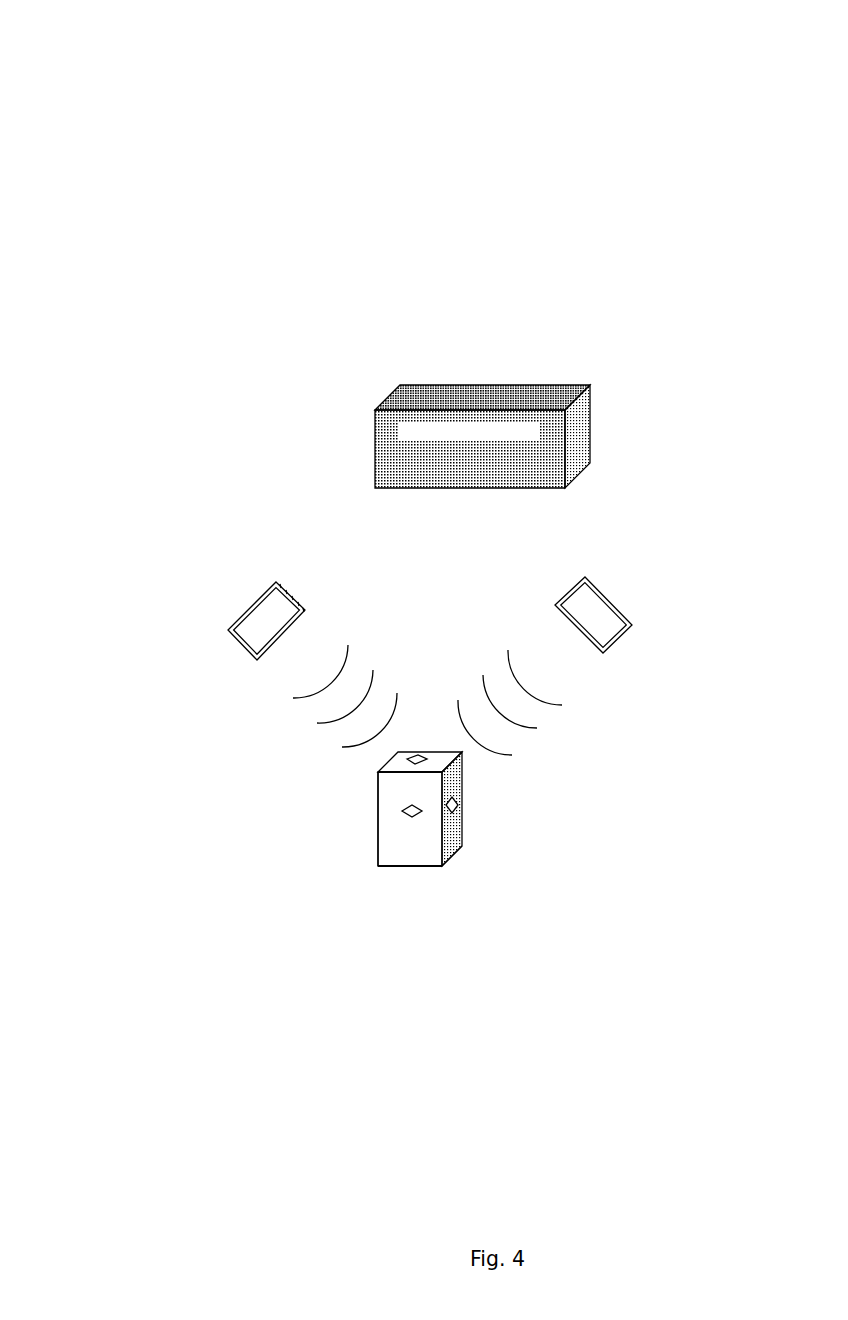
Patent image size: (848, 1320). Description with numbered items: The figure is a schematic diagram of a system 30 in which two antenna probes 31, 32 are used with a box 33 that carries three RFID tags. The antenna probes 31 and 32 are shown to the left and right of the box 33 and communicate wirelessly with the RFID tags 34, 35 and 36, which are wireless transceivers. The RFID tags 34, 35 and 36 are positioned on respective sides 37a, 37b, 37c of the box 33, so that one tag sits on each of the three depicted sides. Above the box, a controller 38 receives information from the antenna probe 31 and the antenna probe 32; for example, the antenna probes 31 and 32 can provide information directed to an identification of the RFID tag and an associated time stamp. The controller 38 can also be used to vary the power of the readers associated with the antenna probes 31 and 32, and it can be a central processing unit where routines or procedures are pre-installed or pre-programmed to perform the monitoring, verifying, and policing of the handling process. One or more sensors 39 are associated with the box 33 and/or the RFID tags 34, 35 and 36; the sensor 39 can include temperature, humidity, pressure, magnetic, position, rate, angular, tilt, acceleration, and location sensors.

The system 30 is at (40, 30).
The antenna probe 31 is at (292, 596).
The antenna probe 32 is at (585, 577).
The box 33 is at (377, 857).
The RFID tag 34 is at (377, 787).
The RFID tag 35 is at (457, 800).
The RFID tag 36 is at (378, 830).
The side of box 37a is at (377, 768).
The side of box 37b is at (413, 858).
The side of box 37c is at (457, 840).
The controller 38 is at (575, 423).
The sensor 39 is at (432, 752).